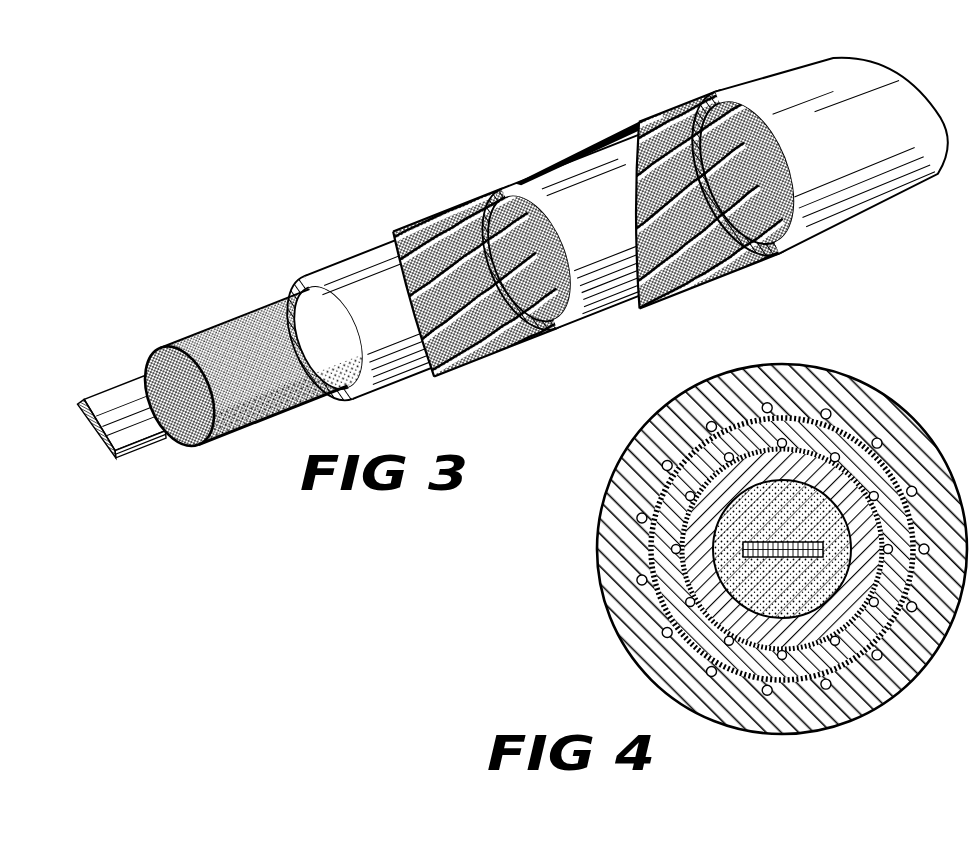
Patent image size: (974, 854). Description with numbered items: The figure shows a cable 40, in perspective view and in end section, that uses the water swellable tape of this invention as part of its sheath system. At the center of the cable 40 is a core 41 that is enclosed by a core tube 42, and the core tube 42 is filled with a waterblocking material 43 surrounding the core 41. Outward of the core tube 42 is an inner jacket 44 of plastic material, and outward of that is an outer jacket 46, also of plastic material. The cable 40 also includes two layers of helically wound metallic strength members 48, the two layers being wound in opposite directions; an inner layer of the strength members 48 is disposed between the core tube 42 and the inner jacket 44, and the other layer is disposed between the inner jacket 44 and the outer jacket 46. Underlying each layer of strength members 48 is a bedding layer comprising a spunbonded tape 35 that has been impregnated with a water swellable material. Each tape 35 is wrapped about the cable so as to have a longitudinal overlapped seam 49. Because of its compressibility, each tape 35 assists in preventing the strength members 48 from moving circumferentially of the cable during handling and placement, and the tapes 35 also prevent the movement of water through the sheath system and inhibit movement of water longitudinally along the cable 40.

In FIG. 3, the cable 40 is at (511, 265).
In FIG. 4, the cable 40 is at (753, 549).
In FIG. 3, the core 41 is at (123, 419).
In FIG. 4, the core 41 is at (783, 573).
In FIG. 3, the waterblocking material 43 is at (251, 368).
In FIG. 4, the waterblocking material 43 is at (782, 549).
In FIG. 3, the core tube 42 is at (412, 304).
In FIG. 4, the core tube 42 is at (782, 551).
In FIG. 3, the longitudinal overlapped seam 49 is at (456, 287).
In FIG. 3, the inner jacket 44 is at (619, 223).
In FIG. 4, the inner jacket 44 is at (782, 549).
In FIG. 3, the spunbonded tape 35 is at (578, 154).
In FIG. 4, the spunbonded tape 35 is at (782, 520).
In FIG. 3, the metallic strength members 48 is at (665, 205).
In FIG. 4, the metallic strength members 48 is at (794, 549).
In FIG. 3, the outer jacket 46 is at (818, 144).
In FIG. 4, the outer jacket 46 is at (782, 549).